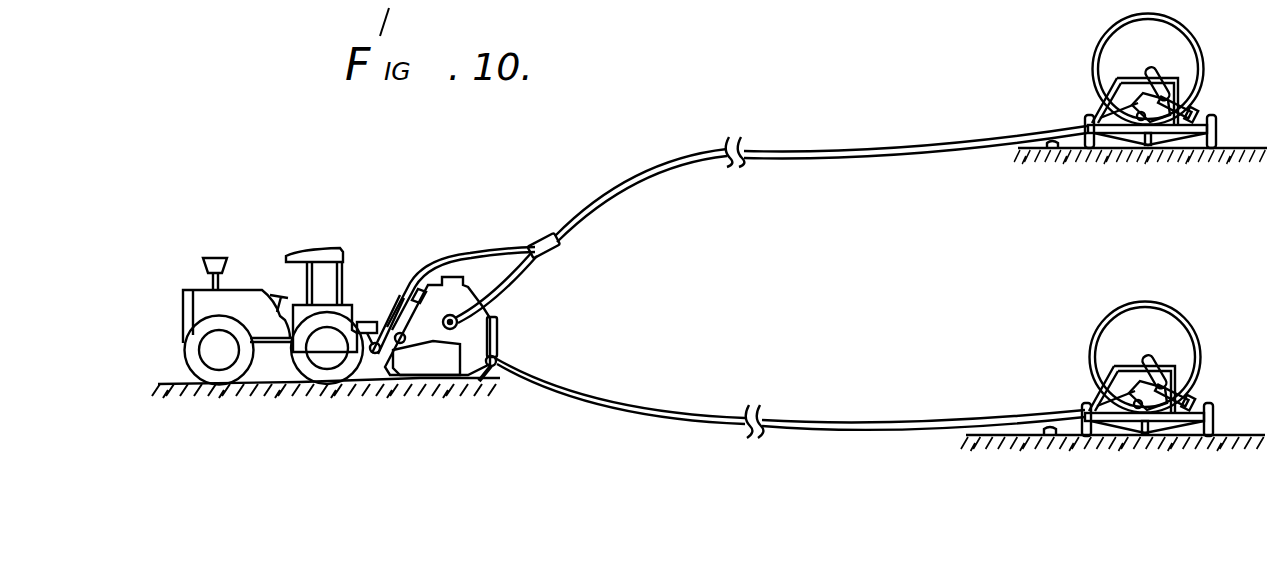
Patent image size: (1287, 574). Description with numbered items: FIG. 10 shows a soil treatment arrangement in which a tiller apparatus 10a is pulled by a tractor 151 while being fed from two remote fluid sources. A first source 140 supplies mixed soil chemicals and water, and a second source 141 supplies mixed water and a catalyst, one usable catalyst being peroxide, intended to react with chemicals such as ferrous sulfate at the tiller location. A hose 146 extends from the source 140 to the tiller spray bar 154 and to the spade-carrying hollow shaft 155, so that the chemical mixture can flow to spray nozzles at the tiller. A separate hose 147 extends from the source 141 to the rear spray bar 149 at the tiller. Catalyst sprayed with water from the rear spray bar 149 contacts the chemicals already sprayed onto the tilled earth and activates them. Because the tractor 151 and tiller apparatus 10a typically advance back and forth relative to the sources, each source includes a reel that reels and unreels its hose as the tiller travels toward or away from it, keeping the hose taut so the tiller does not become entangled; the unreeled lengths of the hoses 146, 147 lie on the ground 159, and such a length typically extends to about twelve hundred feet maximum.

The tiller apparatus 10a is at (423, 278).
The source 140 is at (1083, 47).
The source 141 is at (1092, 323).
The hose 146 is at (818, 148).
The hose 147 is at (792, 419).
The rear spray bar 149 is at (483, 378).
The tractor 151 is at (256, 266).
The spray bar 154 is at (371, 364).
The hollow rotary shaft 155 is at (458, 330).
The ground 159 is at (1050, 150).